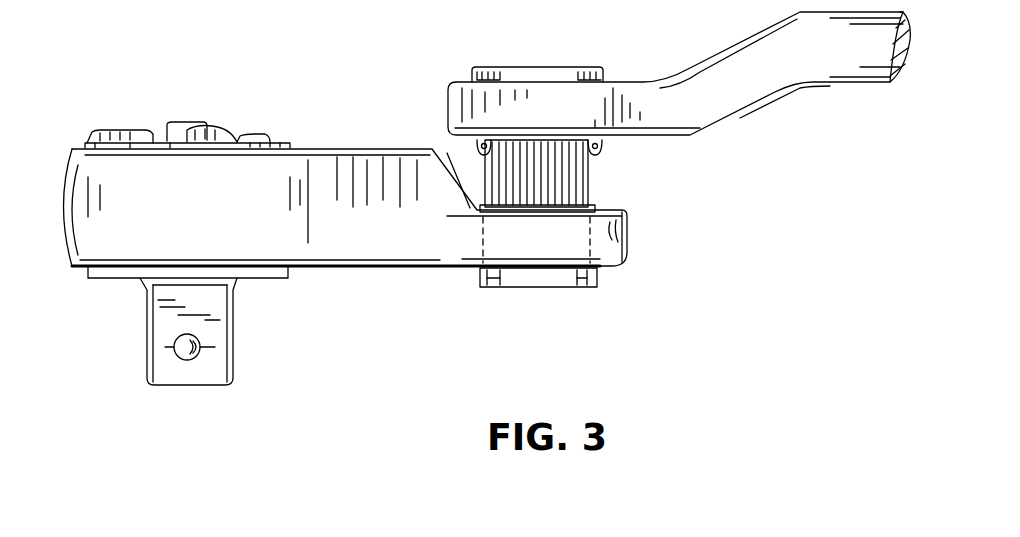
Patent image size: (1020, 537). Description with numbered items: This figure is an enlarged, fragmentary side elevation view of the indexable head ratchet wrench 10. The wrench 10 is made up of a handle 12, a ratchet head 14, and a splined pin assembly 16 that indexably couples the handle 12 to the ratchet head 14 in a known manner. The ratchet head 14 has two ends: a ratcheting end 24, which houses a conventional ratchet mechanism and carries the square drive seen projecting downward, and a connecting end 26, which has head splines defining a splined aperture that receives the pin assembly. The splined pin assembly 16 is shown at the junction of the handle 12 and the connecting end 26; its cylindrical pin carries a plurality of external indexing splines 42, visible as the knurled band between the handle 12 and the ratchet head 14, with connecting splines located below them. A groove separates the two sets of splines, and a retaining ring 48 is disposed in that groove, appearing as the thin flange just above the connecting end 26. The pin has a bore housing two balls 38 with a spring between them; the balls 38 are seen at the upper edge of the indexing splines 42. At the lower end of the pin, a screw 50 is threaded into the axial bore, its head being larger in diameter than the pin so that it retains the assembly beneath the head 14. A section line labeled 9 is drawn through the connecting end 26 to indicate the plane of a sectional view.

The indexable head ratchet wrench 10 is at (826, 195).
The handle 12 is at (720, 46).
The ratchet head 14 is at (375, 247).
The splined pin assembly 16 is at (560, 66).
The ratcheting end 24 is at (93, 247).
The connecting end 26 is at (613, 240).
The balls 38 is at (600, 147).
The external indexing splines 42 is at (593, 183).
The retaining ring 48 is at (592, 208).
The screw 50 is at (556, 279).
The section line 9- 9 is at (403, 304).